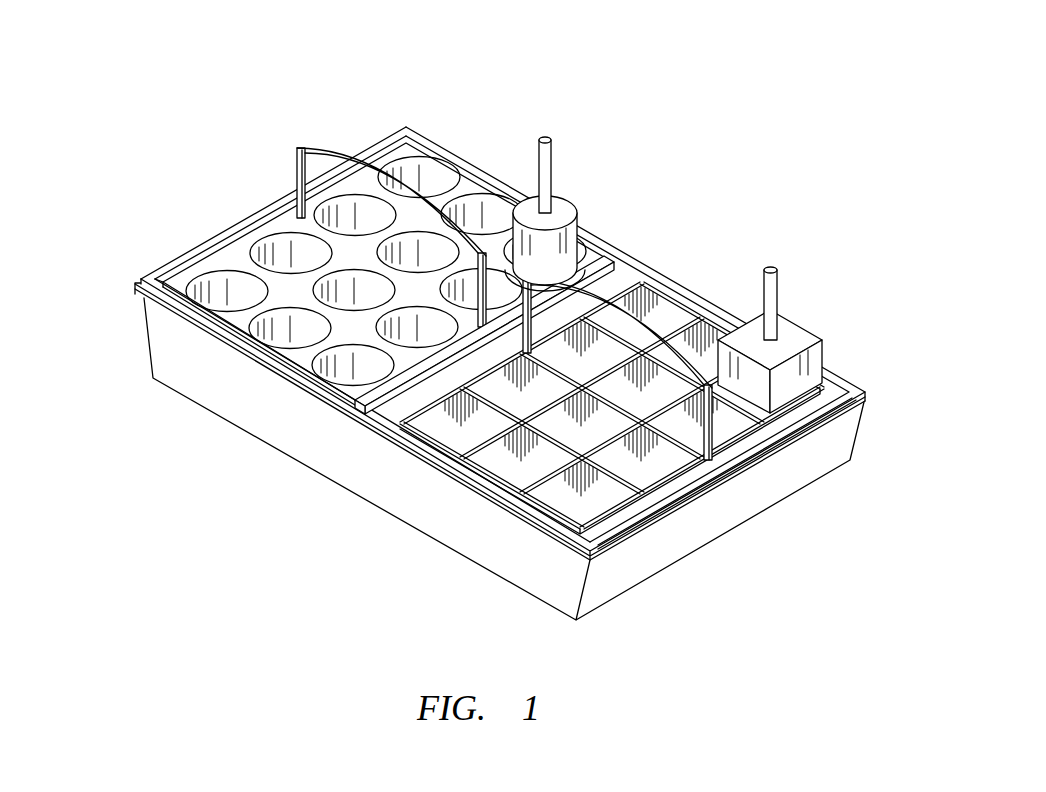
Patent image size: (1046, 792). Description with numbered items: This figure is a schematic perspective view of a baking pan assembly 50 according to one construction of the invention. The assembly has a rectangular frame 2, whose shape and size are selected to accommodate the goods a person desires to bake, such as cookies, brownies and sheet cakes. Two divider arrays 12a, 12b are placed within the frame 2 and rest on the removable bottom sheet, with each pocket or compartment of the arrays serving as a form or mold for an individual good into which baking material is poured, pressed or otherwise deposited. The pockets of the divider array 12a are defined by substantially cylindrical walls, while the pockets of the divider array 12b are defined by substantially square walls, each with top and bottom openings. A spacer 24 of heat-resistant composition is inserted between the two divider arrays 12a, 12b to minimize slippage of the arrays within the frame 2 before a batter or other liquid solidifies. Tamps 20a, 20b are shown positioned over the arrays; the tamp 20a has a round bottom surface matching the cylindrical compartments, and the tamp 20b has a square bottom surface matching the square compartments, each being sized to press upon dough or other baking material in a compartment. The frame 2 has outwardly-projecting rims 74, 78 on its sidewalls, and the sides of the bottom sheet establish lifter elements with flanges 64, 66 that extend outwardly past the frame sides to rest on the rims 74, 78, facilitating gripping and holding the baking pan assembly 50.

The baking pan assembly 50 is at (629, 46).
The rectangular frame 2 is at (282, 433).
The divider array 12a is at (420, 150).
The divider array 12b is at (668, 292).
The tamp 20a is at (564, 202).
The tamp 20b is at (803, 321).
The spacer 24 is at (618, 273).
The flange 64 is at (855, 390).
The flange 66 is at (193, 250).
The rim 74 is at (613, 547).
The rim 78 is at (135, 284).